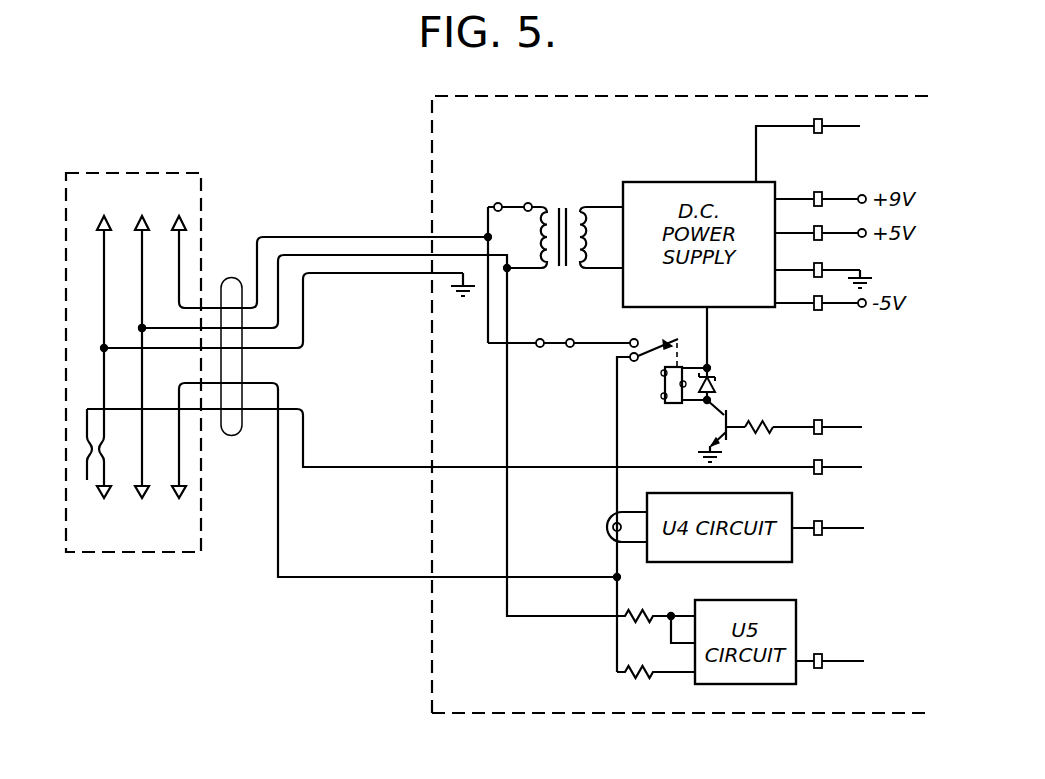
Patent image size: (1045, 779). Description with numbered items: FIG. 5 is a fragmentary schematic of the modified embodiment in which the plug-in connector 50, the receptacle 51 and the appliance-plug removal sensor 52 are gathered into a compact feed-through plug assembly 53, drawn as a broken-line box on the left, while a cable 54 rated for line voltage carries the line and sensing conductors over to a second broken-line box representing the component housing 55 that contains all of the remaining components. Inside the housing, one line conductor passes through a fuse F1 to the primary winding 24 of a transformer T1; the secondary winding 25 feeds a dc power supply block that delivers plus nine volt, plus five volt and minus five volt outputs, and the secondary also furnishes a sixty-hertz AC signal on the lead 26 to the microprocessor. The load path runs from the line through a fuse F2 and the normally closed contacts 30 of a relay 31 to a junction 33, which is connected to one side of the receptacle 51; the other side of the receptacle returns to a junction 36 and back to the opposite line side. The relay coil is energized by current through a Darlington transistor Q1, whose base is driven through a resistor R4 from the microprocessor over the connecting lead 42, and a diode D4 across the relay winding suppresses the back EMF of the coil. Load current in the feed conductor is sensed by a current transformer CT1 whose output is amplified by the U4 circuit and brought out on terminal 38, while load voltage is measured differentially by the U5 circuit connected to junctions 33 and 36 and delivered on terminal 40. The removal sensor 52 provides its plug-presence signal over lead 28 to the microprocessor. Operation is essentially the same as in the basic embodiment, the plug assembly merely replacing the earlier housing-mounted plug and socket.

The component housing 55 is at (456, 96).
The feed-through plug assembly 53 is at (108, 173).
The plug-in connector 50 is at (142, 229).
The receptacle 51 is at (142, 498).
The appliance-plug removal sensor 52 is at (87, 444).
The junction 36 is at (142, 328).
The cable 54 is at (231, 288).
The primary winding 24 is at (540, 233).
The secondary winding 25 is at (585, 226).
The lead 26 is at (860, 126).
The normally closed contacts 30 is at (665, 339).
The relay 31 is at (665, 381).
The connecting lead 42 is at (862, 427).
The lead 28 is at (862, 467).
The terminal 38 is at (826, 520).
The junction 33 is at (620, 579).
The terminal 40 is at (826, 652).
The fuse F1 is at (517, 199).
The fuse F2 is at (559, 330).
The transformer T1 is at (560, 217).
The diode D4 is at (727, 355).
The Darlington transistor Q1 is at (711, 431).
The resistor R4 is at (759, 415).
The current transformer CT1 is at (608, 528).